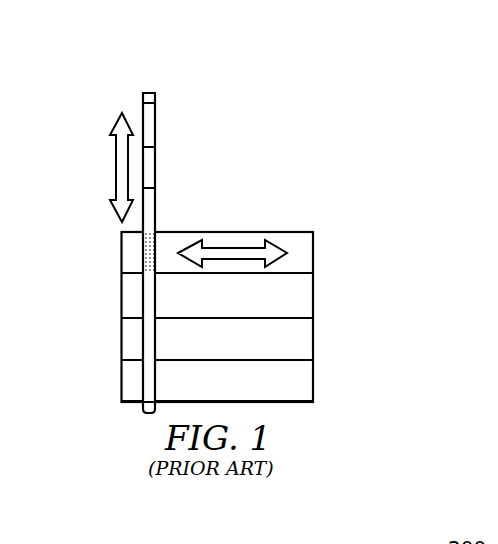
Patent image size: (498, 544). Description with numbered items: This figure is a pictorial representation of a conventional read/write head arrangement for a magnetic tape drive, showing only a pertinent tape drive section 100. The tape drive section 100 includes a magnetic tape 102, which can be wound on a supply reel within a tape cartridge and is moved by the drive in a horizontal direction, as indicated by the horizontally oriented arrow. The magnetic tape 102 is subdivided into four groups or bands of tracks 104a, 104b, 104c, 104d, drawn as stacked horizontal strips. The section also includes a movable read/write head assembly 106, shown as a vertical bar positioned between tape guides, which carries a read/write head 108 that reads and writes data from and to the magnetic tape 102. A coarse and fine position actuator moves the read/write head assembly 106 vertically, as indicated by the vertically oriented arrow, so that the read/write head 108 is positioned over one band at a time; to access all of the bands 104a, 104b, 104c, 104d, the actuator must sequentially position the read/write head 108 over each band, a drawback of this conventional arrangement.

The tape drive section 100 is at (229, 228).
The magnetic tape 102 is at (255, 231).
The first band of tracks 104a is at (313, 252).
The second band of tracks 104b is at (313, 297).
The third band of tracks 104c is at (313, 340).
The fourth band of tracks 104d is at (313, 382).
The read/write head assembly 106 is at (148, 92).
The read/write head 108 is at (142, 256).